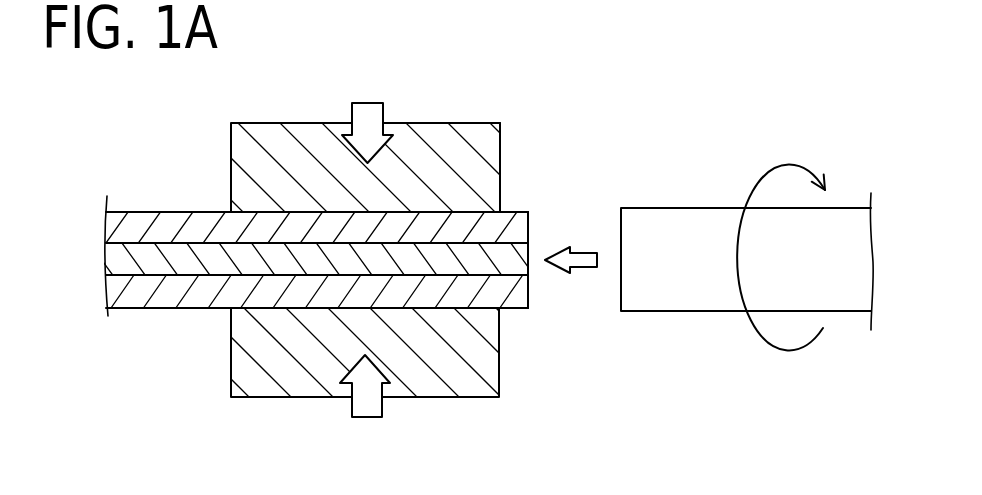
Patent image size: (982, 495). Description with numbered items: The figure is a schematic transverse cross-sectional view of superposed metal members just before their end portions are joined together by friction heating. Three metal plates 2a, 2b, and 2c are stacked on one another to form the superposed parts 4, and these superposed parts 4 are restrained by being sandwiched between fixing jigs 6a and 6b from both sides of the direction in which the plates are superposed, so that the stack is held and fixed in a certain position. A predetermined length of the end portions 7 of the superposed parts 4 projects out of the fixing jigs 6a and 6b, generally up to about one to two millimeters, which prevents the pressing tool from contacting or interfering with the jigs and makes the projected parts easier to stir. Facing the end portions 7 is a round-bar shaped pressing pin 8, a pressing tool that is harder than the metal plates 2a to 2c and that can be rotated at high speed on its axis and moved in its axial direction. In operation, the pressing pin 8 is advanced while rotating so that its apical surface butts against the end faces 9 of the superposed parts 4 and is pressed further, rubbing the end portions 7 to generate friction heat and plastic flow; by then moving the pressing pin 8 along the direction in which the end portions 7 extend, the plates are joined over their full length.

The metal plate 2a is at (152, 220).
The metal plate 2b is at (122, 262).
The metal plate 2c is at (188, 295).
The superposed parts 4 is at (198, 190).
The fixing jig 6a is at (430, 138).
The fixing jig 6b is at (458, 383).
The end portions 7 is at (523, 192).
The pressing pin 8 is at (849, 277).
The end faces 9 is at (530, 271).